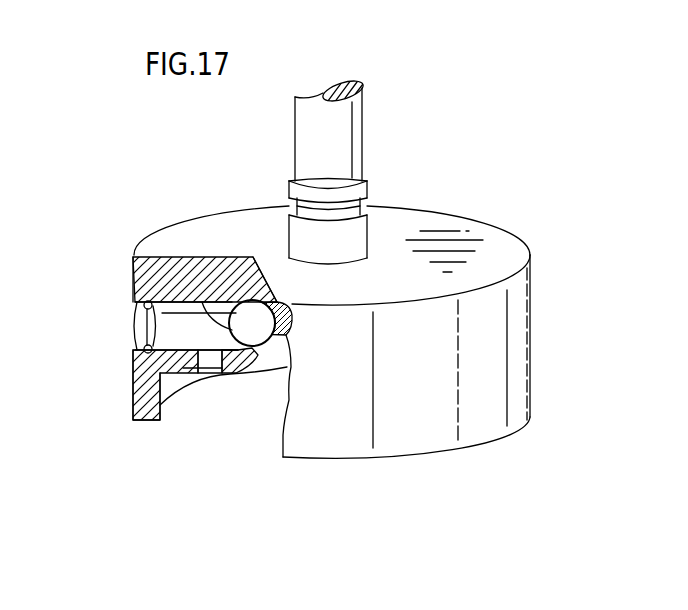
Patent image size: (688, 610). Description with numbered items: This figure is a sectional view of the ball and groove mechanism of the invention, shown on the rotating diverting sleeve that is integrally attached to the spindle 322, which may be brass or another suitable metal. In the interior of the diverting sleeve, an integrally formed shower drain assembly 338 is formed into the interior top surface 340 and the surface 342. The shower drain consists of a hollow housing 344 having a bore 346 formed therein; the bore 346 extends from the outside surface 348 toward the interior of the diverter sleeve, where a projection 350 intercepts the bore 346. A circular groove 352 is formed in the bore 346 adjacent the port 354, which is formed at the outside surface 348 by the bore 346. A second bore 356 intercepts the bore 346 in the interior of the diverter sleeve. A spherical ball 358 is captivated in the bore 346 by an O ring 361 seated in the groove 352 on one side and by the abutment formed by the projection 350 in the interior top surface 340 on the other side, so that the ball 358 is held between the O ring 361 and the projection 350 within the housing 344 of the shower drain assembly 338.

The spindle 322 is at (373, 231).
The shower drain assembly 338 is at (127, 318).
The interior top surface 340 is at (278, 300).
The surface 342 is at (160, 407).
The hollow housing 344 is at (187, 375).
The bore 346 is at (243, 372).
The outside surface 348 is at (132, 257).
The projection 350 is at (266, 337).
The circular groove 352 is at (136, 297).
The port 354 is at (139, 333).
The second bore 356 is at (215, 373).
The spherical ball 358 is at (258, 354).
The O ring 361 is at (143, 352).